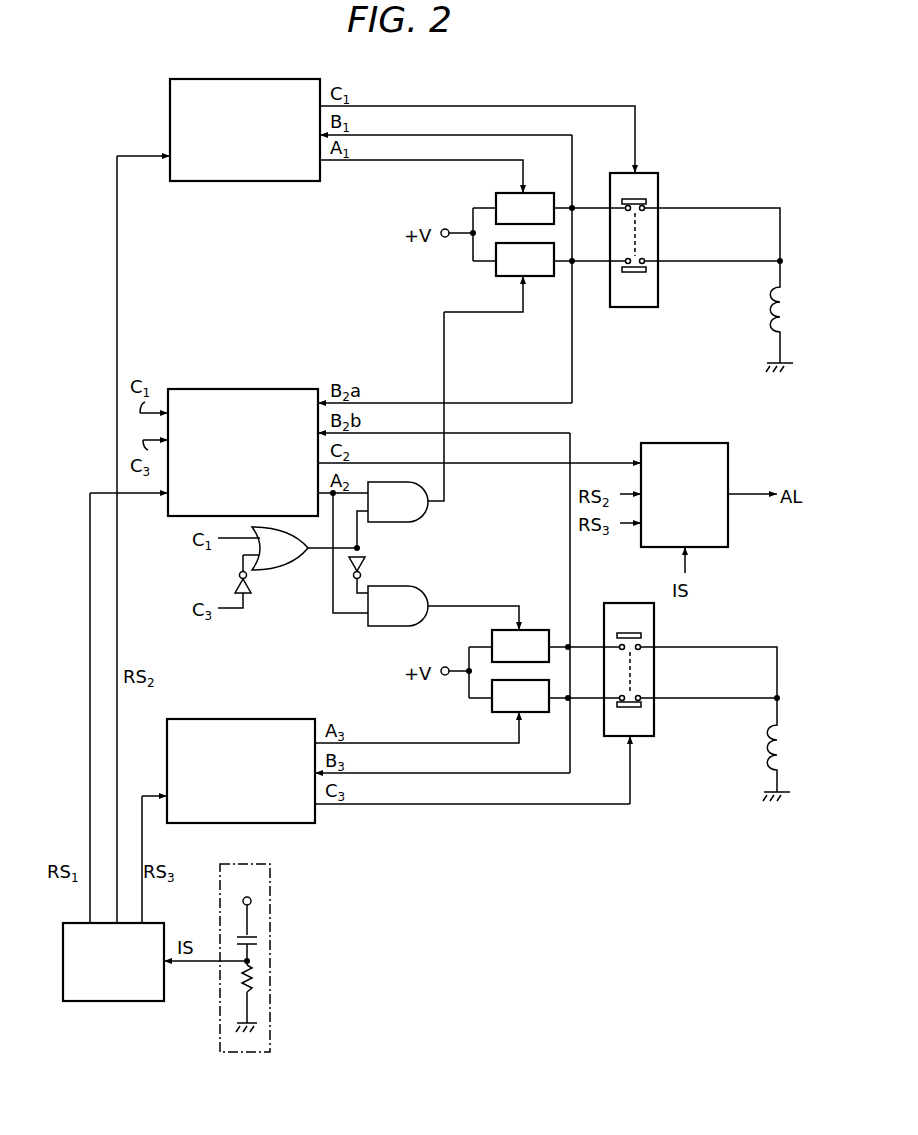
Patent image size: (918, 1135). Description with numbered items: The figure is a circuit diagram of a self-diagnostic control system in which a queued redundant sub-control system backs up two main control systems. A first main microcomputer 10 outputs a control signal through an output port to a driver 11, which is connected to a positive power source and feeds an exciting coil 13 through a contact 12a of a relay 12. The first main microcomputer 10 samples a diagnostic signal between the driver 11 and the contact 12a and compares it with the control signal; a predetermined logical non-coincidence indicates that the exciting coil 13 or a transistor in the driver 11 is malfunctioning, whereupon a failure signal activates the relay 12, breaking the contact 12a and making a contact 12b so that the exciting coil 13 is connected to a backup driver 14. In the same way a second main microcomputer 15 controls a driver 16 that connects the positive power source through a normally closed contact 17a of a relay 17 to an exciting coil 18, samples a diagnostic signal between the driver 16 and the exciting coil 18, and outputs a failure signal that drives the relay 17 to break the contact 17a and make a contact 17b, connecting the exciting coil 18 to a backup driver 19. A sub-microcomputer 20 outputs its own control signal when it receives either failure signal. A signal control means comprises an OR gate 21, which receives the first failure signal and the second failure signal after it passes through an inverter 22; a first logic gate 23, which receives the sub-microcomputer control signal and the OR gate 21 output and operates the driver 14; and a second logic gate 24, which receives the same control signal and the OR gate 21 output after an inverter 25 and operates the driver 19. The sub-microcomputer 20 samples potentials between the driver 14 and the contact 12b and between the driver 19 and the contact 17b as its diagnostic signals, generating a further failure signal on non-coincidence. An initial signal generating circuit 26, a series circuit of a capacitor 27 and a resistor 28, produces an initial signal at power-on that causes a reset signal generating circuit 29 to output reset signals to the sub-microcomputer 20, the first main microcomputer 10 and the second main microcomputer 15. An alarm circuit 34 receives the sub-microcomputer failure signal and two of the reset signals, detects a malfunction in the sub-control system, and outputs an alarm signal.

The first main microcomputer 10 is at (267, 79).
The driver 11 is at (530, 190).
The relay 12 is at (656, 239).
The contact 12a is at (636, 195).
The contact 12b is at (636, 281).
The exciting coil 13 is at (777, 313).
The driver 14 is at (538, 277).
The second main microcomputer 15 is at (262, 719).
The driver 16 is at (536, 713).
The relay 17 is at (644, 669).
The normally closed contact 17a is at (631, 715).
The contact 17b is at (631, 630).
The exciting coil 18 is at (772, 753).
The driver 19 is at (527, 630).
The sub-microcomputer 20 is at (265, 389).
The OR gate 21 is at (275, 572).
The inverter 22 is at (239, 580).
The AND gate 23 is at (424, 514).
The AND gate 24 is at (392, 586).
The inverter 25 is at (367, 562).
The initial signal generating circuit 26 is at (263, 958).
The capacitor 27 is at (258, 940).
The resistor 28 is at (250, 982).
The reset signal generating circuit 29 is at (138, 1002).
The alarm circuit 34 is at (688, 443).